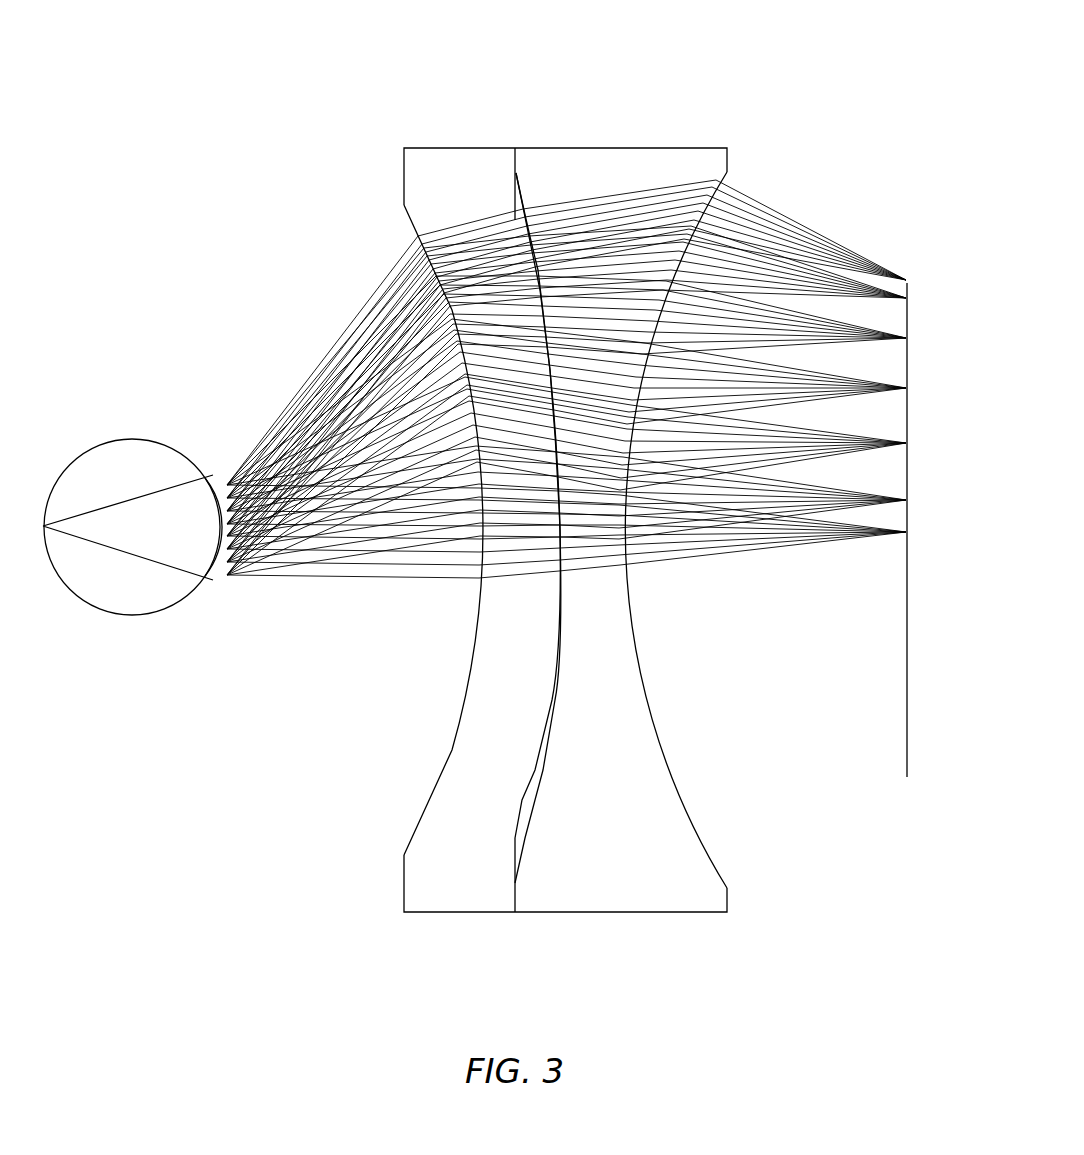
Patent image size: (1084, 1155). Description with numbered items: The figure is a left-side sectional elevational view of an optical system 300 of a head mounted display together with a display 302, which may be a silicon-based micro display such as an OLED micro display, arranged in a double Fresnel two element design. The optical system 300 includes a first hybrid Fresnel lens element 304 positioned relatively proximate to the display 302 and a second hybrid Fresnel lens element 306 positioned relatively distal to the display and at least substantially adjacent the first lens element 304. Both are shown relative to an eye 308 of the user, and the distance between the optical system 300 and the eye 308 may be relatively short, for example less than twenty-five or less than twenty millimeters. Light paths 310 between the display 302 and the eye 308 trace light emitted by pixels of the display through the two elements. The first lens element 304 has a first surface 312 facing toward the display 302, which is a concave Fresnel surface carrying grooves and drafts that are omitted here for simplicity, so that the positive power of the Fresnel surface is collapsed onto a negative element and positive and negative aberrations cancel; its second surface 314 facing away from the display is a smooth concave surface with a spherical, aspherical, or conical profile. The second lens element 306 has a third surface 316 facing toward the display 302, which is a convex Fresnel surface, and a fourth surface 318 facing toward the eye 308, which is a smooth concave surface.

The optical system 300 is at (782, 62).
The display 302 is at (908, 670).
The first hybrid Fresnel lens element 304 is at (632, 529).
The second hybrid Fresnel lens element 306 is at (454, 506).
The eye 308 is at (125, 438).
The light paths 310 is at (793, 223).
The first surface 312 is at (650, 745).
The second surface 314 is at (530, 845).
The third surface 316 is at (527, 797).
The fourth surface 318 is at (461, 706).